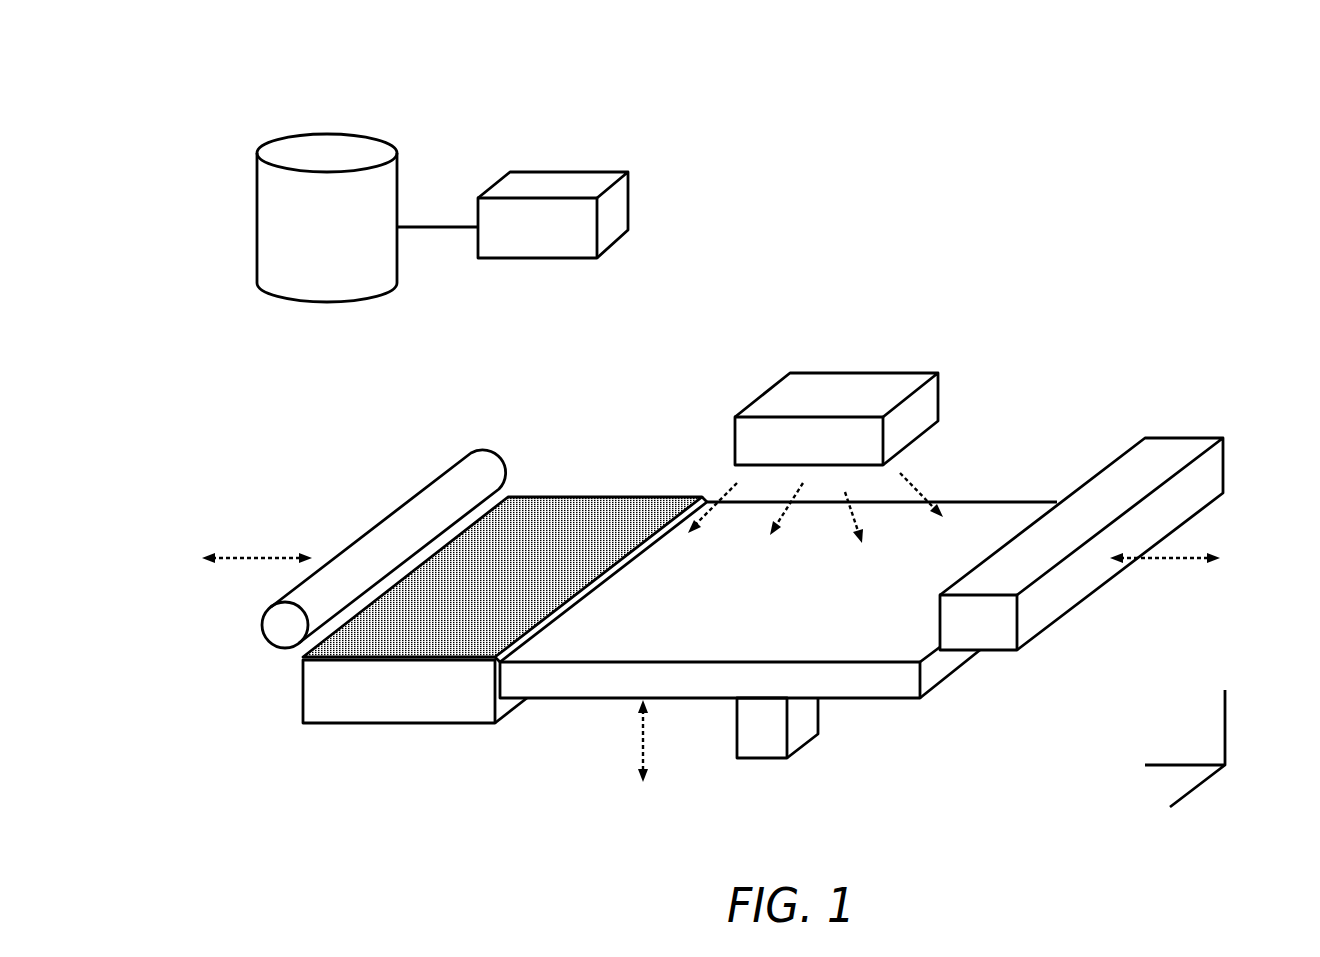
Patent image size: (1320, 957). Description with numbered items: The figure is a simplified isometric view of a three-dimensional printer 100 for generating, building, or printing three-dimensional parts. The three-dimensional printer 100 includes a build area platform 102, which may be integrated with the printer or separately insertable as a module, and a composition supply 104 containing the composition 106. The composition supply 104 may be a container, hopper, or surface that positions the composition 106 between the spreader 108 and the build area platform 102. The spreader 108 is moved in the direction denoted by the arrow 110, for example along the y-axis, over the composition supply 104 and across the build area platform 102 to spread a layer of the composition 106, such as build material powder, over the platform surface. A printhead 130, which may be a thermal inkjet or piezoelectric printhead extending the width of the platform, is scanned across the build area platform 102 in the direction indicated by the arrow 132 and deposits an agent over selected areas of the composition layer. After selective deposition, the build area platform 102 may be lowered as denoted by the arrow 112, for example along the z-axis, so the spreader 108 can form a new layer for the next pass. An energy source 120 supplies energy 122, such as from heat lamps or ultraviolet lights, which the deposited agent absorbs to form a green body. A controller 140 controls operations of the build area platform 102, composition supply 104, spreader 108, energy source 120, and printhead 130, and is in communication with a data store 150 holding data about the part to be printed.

The 3D printer 100 is at (342, 77).
The build area platform 102 is at (880, 700).
The composition supply 104 is at (370, 723).
The composition 106 is at (307, 657).
The spreader 108 is at (362, 537).
The arrow 110 is at (262, 558).
The arrow 112 is at (648, 762).
The energy source 120 is at (847, 373).
The energy 122 is at (728, 495).
The printhead 130 is at (1183, 438).
The arrow 132 is at (1167, 560).
The controller 140 is at (580, 172).
The data store 150 is at (307, 272).